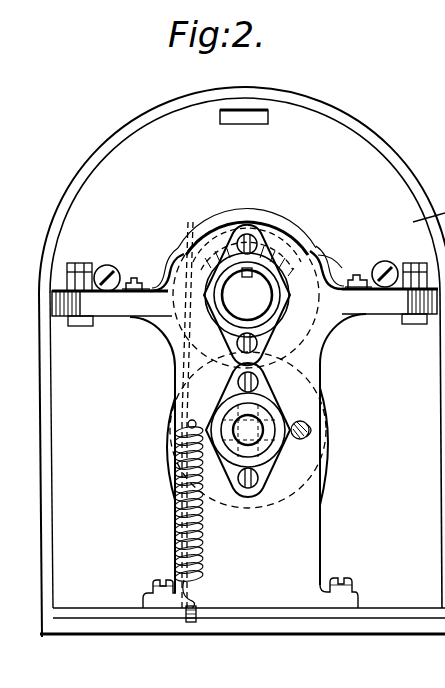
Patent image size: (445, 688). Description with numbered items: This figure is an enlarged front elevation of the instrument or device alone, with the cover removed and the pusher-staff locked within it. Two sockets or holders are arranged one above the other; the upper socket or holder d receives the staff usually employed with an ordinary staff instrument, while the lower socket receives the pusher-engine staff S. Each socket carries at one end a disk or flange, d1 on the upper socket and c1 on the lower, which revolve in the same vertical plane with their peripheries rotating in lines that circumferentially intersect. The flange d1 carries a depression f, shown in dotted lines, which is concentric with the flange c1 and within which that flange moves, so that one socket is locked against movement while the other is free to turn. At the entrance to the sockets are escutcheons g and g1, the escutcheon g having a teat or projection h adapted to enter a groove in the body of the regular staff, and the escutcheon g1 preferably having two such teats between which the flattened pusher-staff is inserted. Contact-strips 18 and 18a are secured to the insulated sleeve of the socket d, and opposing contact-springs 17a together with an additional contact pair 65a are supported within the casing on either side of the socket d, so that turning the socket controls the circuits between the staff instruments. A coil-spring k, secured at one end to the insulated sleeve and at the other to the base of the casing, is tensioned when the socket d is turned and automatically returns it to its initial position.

The contact-springs 17a is at (172, 262).
The depression f is at (322, 260).
The contact pair 65a is at (320, 260).
The disk or flange d1 is at (283, 232).
The contact-strips 18 is at (250, 236).
The contact-strips 18a is at (194, 407).
The escutcheon g is at (210, 298).
The socket or holder d is at (247, 295).
The teat or projection h is at (252, 271).
The escutcheon g1 is at (270, 410).
The staff S is at (266, 420).
The disk or flange c1 is at (322, 447).
The coil-spring k is at (175, 492).